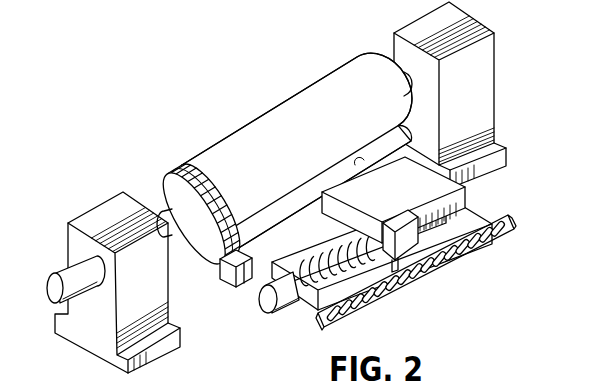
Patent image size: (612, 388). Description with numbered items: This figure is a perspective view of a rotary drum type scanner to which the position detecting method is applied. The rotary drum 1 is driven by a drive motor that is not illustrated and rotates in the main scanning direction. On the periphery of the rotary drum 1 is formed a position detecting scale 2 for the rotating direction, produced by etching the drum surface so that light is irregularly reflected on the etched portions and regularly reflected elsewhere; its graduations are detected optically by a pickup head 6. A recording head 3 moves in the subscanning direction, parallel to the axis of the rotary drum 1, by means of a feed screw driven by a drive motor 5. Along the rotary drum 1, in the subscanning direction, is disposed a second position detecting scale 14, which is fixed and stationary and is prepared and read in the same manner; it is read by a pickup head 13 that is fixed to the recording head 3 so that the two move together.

The rotary drum 1 is at (280, 126).
The position detecting scale 2 is at (176, 176).
The recording head 3 is at (434, 192).
The drive motor 5 is at (284, 312).
The pickup head 6 is at (224, 281).
The pickup head 13 is at (406, 238).
The position detecting scale 14 is at (508, 218).